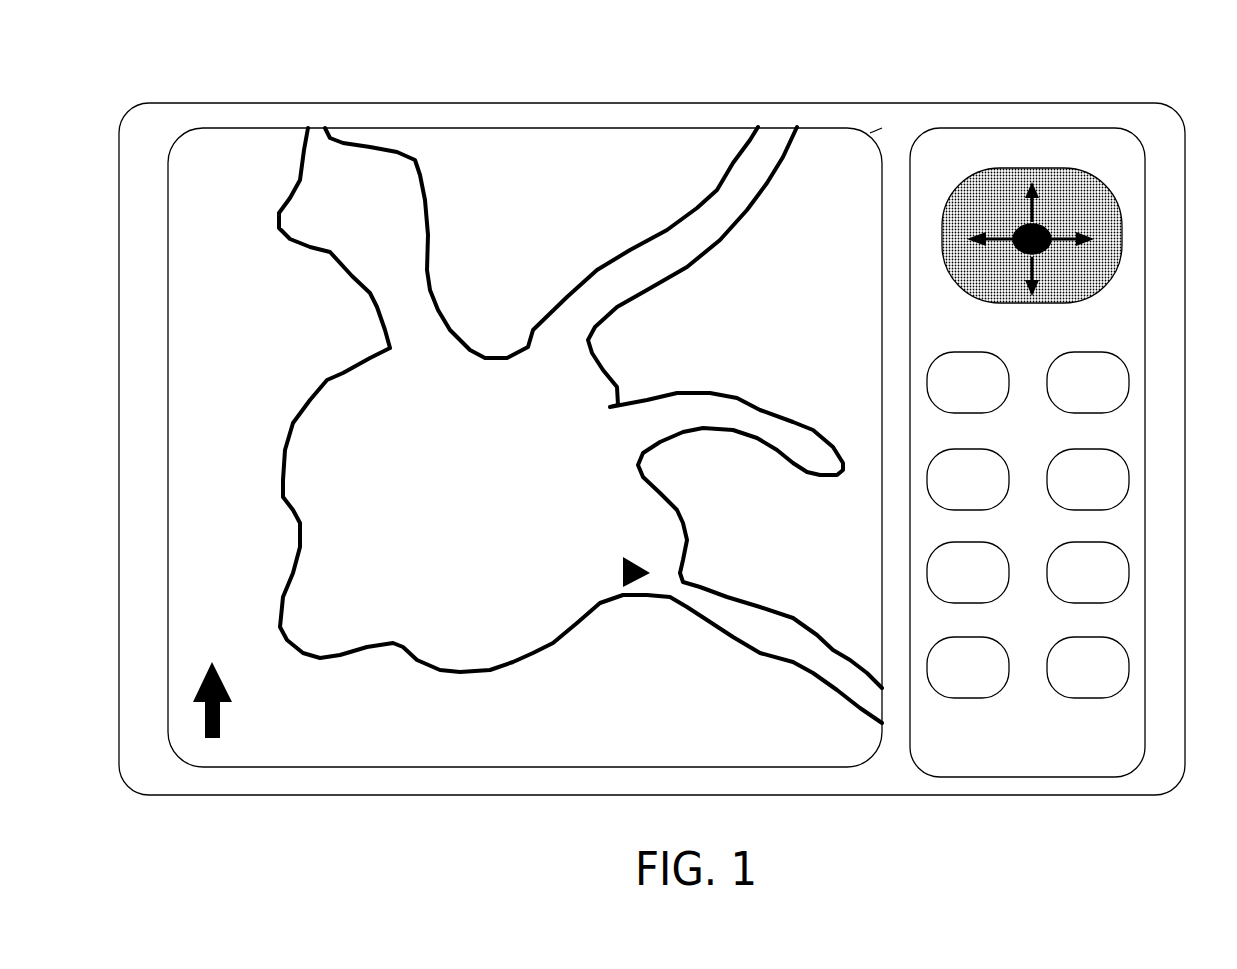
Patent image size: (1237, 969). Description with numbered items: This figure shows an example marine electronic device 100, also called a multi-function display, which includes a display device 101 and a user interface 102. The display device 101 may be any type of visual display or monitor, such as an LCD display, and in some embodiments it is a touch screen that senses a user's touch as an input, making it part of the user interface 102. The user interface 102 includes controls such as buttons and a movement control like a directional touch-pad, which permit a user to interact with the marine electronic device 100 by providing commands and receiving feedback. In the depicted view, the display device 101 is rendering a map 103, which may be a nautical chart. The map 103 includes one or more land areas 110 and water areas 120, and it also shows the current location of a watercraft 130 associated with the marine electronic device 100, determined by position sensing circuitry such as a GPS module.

The marine electronic device 100 is at (817, 103).
The display device 101 is at (632, 128).
The user interface 102 is at (1143, 143).
The map 103 is at (874, 131).
The land area 110 is at (546, 197).
The water area 120 is at (362, 438).
The watercraft 130 is at (640, 570).